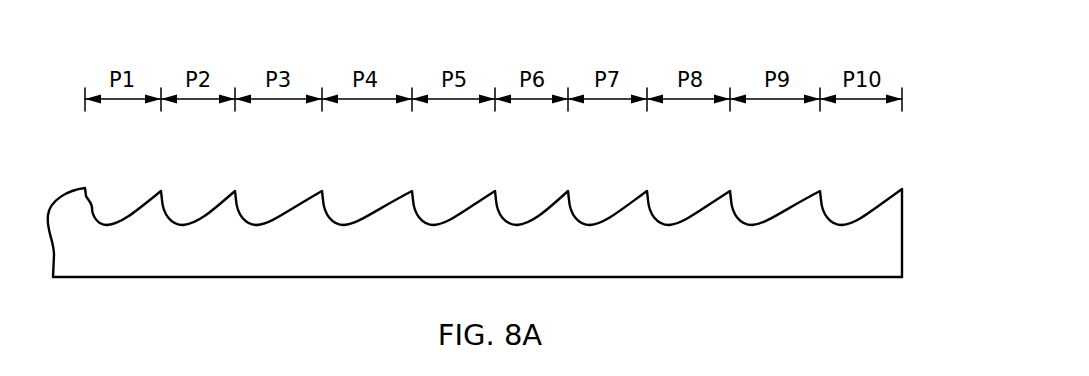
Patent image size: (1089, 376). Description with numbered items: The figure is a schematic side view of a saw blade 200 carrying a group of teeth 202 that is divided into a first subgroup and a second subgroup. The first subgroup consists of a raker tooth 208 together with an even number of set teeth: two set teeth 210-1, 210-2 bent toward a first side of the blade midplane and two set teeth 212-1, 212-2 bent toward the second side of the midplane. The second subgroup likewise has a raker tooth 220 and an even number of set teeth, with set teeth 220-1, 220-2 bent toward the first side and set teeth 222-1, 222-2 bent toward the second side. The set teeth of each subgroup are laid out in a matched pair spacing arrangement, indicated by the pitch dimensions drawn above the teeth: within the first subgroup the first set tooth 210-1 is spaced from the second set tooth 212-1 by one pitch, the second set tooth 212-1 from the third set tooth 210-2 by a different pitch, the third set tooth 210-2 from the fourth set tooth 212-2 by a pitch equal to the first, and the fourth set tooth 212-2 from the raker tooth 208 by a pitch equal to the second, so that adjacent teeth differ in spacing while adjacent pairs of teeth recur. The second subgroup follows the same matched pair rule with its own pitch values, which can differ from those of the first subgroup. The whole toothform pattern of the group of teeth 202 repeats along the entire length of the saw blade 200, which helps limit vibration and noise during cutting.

The saw blade 200 is at (472, 260).
The group of teeth 202 is at (953, 80).
The raker tooth 208 is at (494, 195).
The first set tooth 210-1 is at (155, 193).
The third set tooth 210-2 is at (300, 201).
The second set tooth 212-1 is at (228, 195).
The fourth set tooth 212-2 is at (406, 194).
The raker tooth 220 is at (886, 196).
The set tooth 220-1 is at (562, 195).
The set tooth 220-2 is at (707, 201).
The set tooth 222-1 is at (638, 195).
The set tooth 222-2 is at (816, 192).